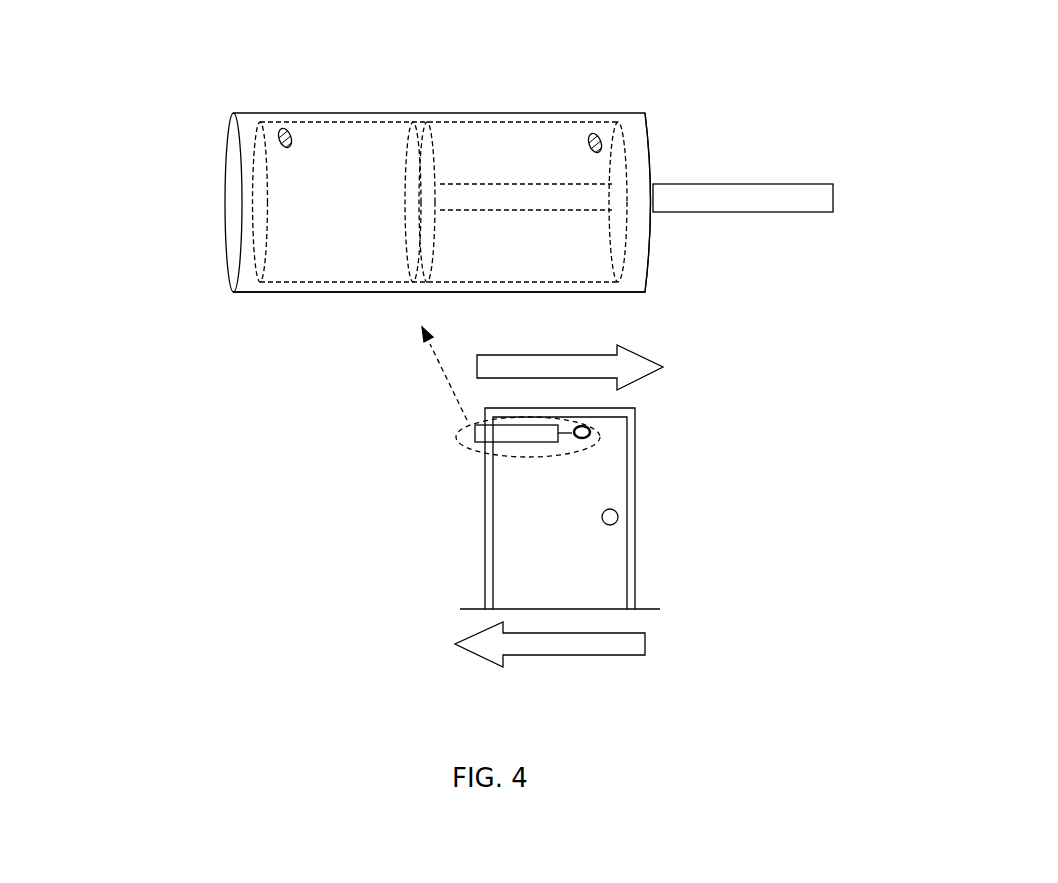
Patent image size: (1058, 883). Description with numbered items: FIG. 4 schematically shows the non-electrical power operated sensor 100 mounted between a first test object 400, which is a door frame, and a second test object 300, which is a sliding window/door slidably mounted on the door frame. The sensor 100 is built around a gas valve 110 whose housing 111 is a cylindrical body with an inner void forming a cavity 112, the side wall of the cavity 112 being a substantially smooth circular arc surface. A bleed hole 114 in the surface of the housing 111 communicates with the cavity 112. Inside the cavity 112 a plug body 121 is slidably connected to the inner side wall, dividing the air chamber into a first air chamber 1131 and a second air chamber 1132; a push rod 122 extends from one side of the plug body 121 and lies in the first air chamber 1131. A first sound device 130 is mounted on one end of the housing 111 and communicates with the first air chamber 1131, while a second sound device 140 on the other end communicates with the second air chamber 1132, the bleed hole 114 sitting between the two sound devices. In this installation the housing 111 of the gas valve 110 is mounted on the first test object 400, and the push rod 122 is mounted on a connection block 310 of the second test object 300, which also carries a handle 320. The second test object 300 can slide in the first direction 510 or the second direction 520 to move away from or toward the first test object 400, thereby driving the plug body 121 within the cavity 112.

The non-electrical power operated sensor 100 is at (192, 122).
The gas valve 110 is at (511, 233).
The housing 111 is at (637, 227).
The cavity 112 is at (647, 292).
The bleed hole 114 is at (353, 120).
The plug body 121 is at (422, 160).
The push rod 122 is at (707, 202).
The first sound device 130 is at (596, 133).
The second sound device 140 is at (285, 128).
The first air chamber 1131 is at (522, 247).
The second air chamber 1132 is at (325, 263).
The second test object 300 is at (600, 558).
The connection block 310 is at (593, 433).
The handle 320 is at (618, 511).
The first test object 400 is at (484, 532).
The first direction 510 is at (512, 372).
The second direction 520 is at (627, 638).